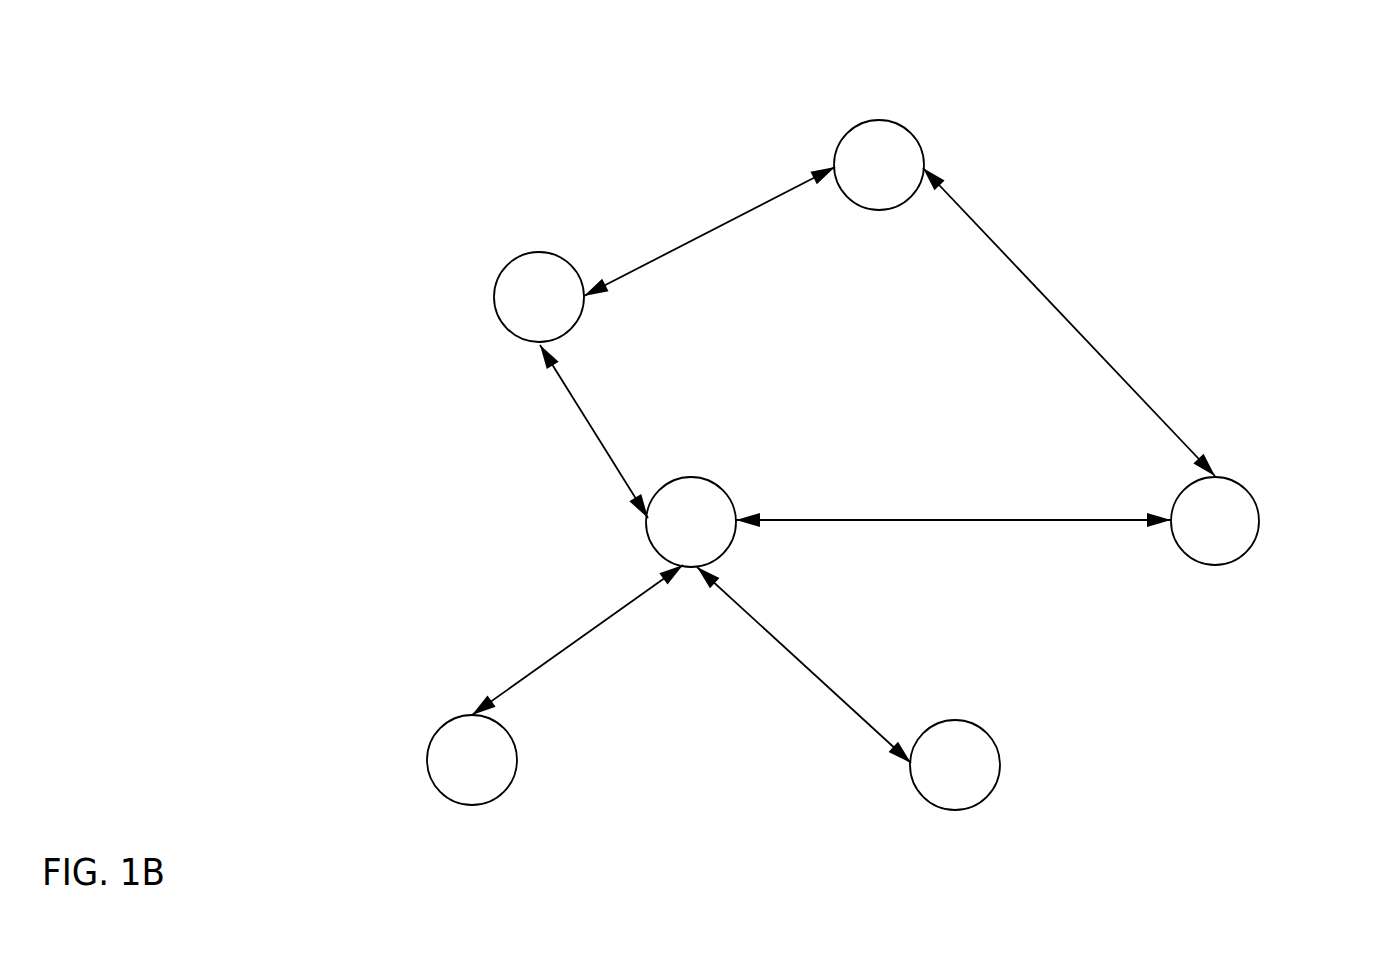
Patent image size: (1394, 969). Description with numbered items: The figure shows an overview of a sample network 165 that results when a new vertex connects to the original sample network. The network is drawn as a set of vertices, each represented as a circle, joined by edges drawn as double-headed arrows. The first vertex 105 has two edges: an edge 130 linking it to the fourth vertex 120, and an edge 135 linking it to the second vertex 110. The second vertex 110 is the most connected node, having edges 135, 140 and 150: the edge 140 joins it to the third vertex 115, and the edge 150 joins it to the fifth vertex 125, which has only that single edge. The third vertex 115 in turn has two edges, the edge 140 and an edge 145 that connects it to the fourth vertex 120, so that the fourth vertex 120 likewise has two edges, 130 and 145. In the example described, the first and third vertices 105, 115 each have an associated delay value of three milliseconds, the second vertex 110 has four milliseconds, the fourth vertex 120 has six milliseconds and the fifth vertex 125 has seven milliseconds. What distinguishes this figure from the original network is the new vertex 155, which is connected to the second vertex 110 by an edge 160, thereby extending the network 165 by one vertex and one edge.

The sample network 165 is at (333, 67).
The first vertex 105 is at (495, 300).
The second vertex 110 is at (705, 477).
The third vertex 115 is at (1259, 518).
The fourth vertex 120 is at (897, 120).
The fifth vertex 125 is at (998, 765).
The new vertex 155 is at (518, 757).
The edge 130 is at (709, 203).
The edge 135 is at (547, 455).
The edge 140 is at (966, 575).
The edge 145 is at (1120, 288).
The edge 150 is at (782, 688).
The edge 160 is at (528, 678).